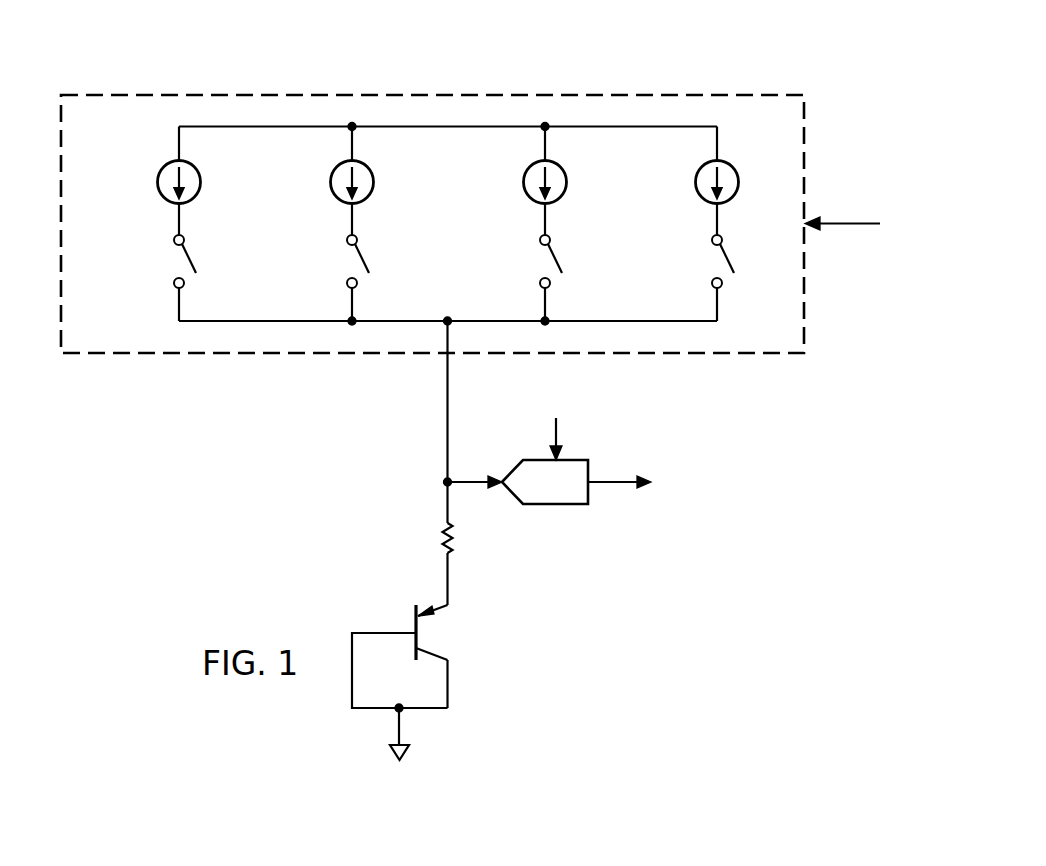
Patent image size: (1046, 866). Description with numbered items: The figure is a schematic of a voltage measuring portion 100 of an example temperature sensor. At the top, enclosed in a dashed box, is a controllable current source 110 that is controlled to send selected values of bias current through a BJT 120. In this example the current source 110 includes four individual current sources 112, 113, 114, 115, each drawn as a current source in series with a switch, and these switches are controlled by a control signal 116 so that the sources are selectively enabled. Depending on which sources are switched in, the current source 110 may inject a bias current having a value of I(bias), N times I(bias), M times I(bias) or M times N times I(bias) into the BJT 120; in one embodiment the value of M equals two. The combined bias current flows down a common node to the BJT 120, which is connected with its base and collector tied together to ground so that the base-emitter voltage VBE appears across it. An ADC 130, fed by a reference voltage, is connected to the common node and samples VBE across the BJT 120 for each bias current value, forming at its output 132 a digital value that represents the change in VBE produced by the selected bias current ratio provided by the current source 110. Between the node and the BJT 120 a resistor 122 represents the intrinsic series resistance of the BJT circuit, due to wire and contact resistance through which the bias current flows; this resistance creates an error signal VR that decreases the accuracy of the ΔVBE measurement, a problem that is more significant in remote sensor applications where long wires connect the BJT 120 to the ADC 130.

The voltage measuring portion 100 is at (545, 52).
The current source 110 is at (242, 86).
The current source 112 is at (198, 195).
The current source 113 is at (371, 195).
The current source 114 is at (564, 195).
The current source 115 is at (736, 195).
The control signal 116 is at (840, 225).
The BJT 120 is at (413, 622).
The resistor 122 is at (445, 532).
The ADC 130 is at (557, 505).
The output 132 is at (615, 484).